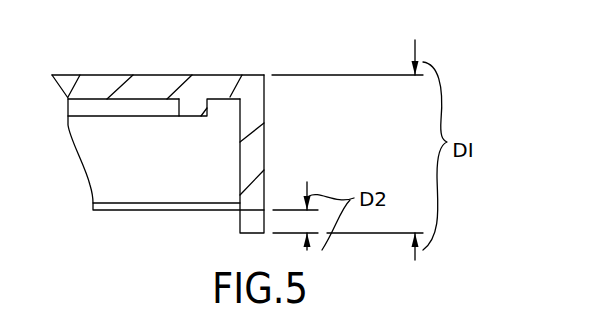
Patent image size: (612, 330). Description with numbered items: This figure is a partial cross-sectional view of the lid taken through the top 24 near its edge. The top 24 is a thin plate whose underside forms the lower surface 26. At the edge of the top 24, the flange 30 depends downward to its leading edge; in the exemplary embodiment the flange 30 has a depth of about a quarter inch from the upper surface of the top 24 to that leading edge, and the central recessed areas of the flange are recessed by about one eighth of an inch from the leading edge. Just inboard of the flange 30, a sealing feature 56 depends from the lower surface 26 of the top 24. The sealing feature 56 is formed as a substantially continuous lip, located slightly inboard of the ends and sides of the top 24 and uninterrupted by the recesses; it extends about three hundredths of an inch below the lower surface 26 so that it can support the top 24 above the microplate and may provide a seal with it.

The top 24 is at (137, 84).
The lower surface 26 is at (142, 99).
The flange 30 is at (265, 113).
The sealing feature 56 is at (198, 115).